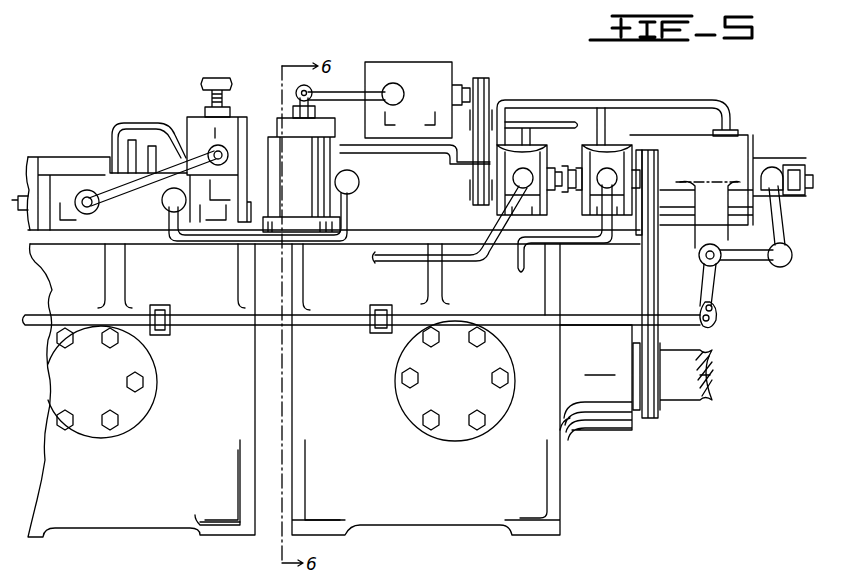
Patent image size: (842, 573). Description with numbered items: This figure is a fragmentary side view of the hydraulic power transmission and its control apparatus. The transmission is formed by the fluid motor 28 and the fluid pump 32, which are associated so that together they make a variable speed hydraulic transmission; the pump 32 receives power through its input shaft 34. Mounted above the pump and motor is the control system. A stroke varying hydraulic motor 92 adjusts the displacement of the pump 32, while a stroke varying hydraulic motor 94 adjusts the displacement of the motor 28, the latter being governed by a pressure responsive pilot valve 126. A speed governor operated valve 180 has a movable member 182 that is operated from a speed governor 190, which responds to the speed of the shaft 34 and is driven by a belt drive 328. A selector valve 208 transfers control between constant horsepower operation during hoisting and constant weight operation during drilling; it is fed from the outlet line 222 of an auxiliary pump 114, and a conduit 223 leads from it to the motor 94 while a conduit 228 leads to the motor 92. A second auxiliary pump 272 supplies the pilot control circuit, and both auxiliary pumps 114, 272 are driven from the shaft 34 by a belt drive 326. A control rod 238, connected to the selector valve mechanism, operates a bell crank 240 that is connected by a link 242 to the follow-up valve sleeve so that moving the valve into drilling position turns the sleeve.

The fluid motor 28 is at (141, 390).
The fluid pump 32 is at (462, 389).
The input shaft 34 is at (702, 368).
The stroke varying hydraulic motor 92 is at (415, 174).
The stroke varying hydraulic motor 94 is at (82, 168).
The auxiliary pump 114 is at (579, 208).
The pressure responsive pilot valve 126 is at (190, 122).
The speed governor operated valve 180 is at (322, 160).
The movable member 182 is at (288, 100).
The speed governor 190 is at (417, 100).
The selector valve 208 is at (151, 183).
The outlet line 222 is at (650, 102).
The conduit 223 is at (150, 122).
The conduit 228 is at (226, 246).
The control rod 238 is at (352, 322).
The bell crank 240 is at (712, 290).
The link 242 is at (780, 232).
The second auxiliary pump 272 is at (478, 204).
The belt drive 326 is at (642, 265).
The belt drive 328 is at (480, 150).